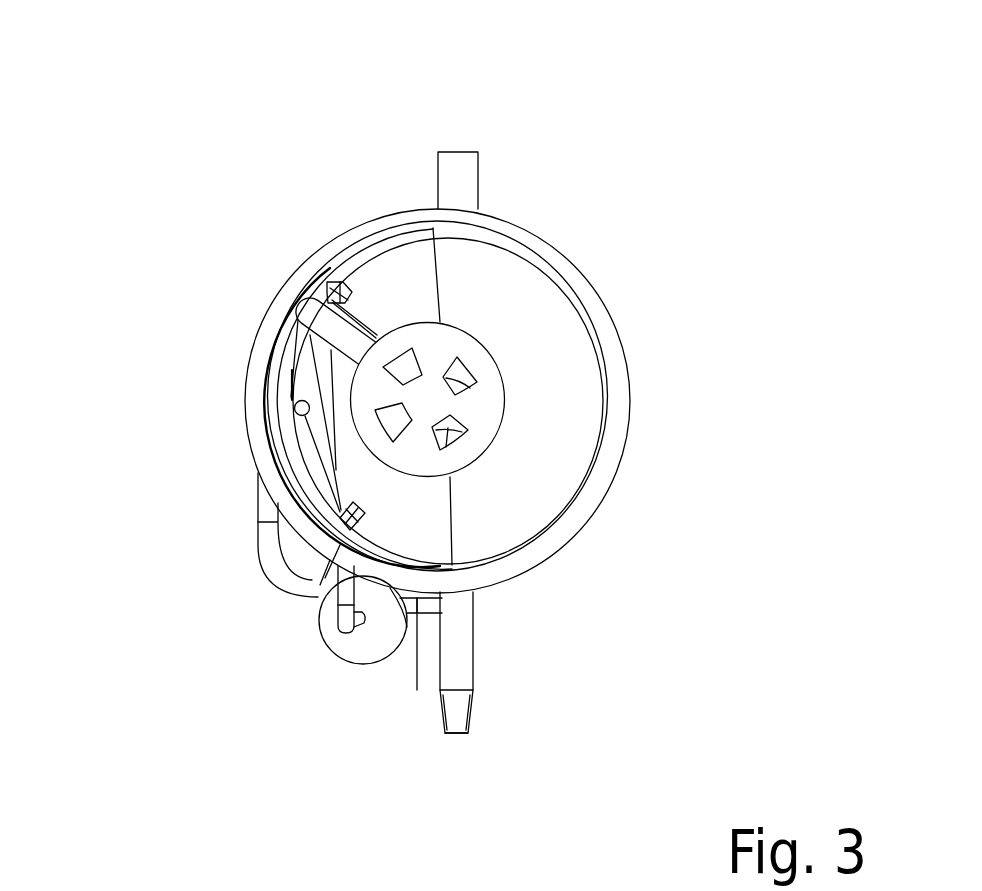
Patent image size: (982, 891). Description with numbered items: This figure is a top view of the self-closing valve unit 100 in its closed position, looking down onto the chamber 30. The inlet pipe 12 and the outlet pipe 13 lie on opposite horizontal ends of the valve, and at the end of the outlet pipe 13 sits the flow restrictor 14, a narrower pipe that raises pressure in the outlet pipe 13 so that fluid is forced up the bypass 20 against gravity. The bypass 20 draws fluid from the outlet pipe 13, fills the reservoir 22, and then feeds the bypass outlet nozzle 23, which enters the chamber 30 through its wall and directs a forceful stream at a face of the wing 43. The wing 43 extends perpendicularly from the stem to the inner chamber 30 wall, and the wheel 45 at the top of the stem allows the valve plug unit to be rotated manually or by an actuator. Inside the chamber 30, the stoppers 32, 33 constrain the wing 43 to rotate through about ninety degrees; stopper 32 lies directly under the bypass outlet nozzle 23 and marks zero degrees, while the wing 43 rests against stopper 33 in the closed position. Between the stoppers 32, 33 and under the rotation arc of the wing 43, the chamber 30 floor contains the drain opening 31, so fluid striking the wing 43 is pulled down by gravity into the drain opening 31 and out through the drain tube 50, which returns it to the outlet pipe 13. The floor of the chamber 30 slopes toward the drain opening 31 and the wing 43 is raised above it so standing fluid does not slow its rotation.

The self-closing valve unit 100 is at (150, 86).
The inlet pipe 12 is at (458, 193).
The outlet pipe 13 is at (473, 644).
The flow restrictor 14 is at (458, 733).
The bypass 20 is at (417, 690).
The reservoir 22 is at (377, 630).
The bypass outlet nozzle 23 is at (360, 542).
The chamber 30 is at (603, 305).
The drain opening 31 is at (345, 410).
The stopper 32 is at (367, 507).
The stopper 33 is at (328, 293).
The wing 43 is at (328, 333).
The wheel 45 is at (510, 405).
The drain tube 50 is at (310, 582).